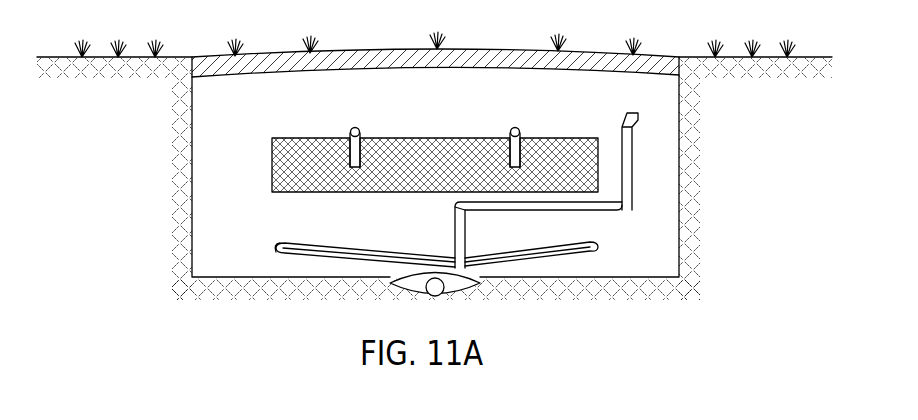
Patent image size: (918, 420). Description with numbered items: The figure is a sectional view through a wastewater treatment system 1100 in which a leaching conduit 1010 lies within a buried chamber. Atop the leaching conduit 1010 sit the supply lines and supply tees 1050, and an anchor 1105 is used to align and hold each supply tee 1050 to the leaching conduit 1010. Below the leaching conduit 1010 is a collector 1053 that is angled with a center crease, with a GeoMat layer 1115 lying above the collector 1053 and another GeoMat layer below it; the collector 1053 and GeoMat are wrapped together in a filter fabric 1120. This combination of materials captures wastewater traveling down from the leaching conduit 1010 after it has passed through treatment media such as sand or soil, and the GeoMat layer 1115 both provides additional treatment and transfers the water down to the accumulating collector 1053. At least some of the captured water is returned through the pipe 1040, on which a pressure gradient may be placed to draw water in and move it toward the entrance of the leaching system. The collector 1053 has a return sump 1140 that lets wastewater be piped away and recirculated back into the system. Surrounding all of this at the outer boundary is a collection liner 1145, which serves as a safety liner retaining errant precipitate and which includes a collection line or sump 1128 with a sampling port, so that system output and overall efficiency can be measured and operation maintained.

The irrigation/drainage system 1100 is at (730, 256).
The leaching conduit 1010 is at (284, 138).
The supply tee 1050 is at (355, 127).
The anchor 1105 is at (360, 152).
The pipe 1040 is at (630, 113).
The collector 1053 is at (410, 258).
The filter fabric 1120 is at (340, 246).
The GeoMat layer 1115 is at (278, 248).
The collection line/sump 1128 is at (426, 292).
The return sump 1140 is at (484, 287).
The collection liner 1145 is at (680, 180).